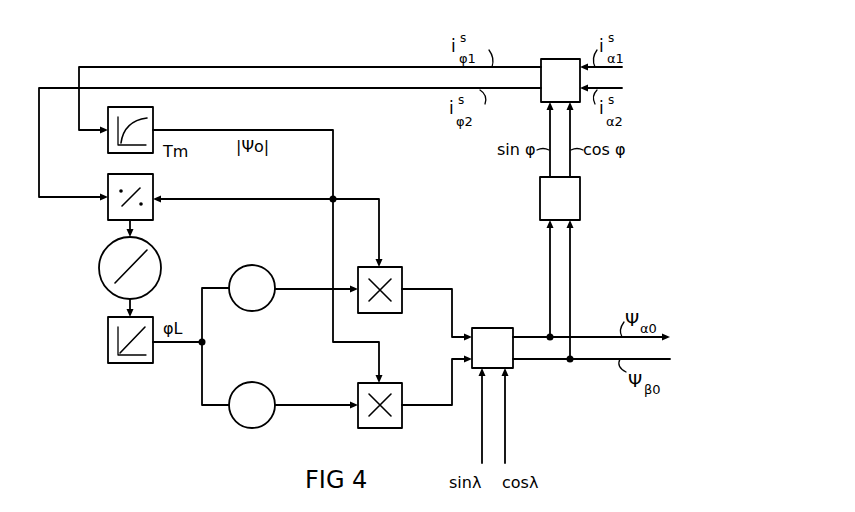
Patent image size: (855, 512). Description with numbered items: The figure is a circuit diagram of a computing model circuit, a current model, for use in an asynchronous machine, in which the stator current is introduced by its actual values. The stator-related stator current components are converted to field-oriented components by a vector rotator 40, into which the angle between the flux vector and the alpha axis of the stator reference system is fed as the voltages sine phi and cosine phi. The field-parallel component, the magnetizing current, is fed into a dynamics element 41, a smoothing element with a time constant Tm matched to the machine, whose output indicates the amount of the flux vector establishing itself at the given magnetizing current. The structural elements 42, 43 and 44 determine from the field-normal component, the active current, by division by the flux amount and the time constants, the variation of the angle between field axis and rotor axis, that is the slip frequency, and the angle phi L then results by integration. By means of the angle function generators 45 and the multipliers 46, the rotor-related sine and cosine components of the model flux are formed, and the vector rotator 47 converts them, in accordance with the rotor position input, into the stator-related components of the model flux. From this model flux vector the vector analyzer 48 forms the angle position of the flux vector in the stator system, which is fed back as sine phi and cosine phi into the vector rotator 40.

The vector rotator 40 is at (556, 59).
The dynamics element 41 is at (108, 148).
The structural element 42 is at (108, 212).
The structural element 43 is at (99, 272).
The structural element 44 is at (108, 335).
The angle function generators 45 is at (252, 311).
The multipliers 46 is at (388, 383).
The vector rotator 47 is at (488, 328).
The vector analyzer 48 is at (580, 199).